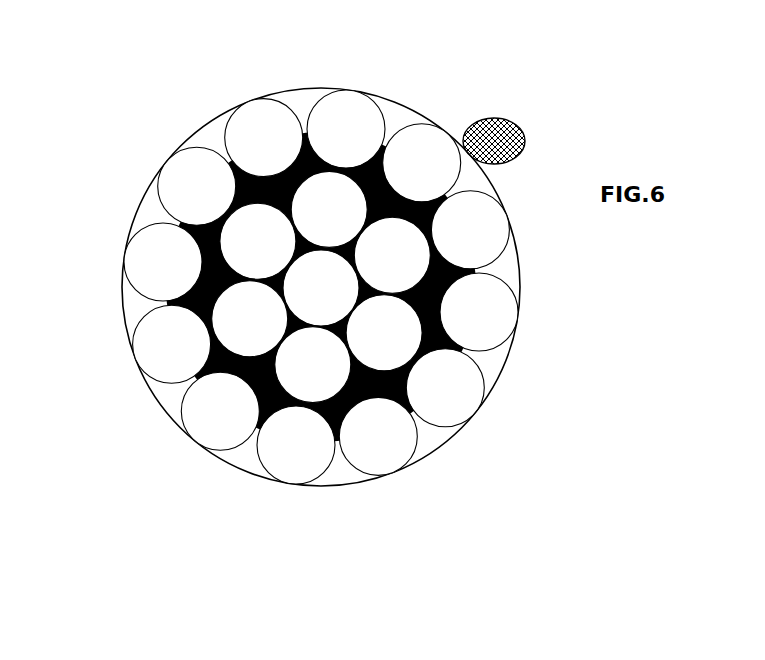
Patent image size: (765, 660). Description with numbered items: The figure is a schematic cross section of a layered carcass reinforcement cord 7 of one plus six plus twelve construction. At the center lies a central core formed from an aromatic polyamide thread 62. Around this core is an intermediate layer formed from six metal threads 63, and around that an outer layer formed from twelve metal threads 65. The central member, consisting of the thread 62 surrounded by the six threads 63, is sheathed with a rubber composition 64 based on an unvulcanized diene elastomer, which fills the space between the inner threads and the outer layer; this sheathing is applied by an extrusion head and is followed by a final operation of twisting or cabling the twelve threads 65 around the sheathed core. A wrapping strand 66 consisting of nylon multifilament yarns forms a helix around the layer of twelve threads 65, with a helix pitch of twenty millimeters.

The carcass reinforcement cord 7 is at (200, 112).
The aromatic polyamide thread 62 is at (308, 297).
The metal threads 63 is at (393, 272).
The rubber composition 64 is at (407, 398).
The metal threads 65 is at (383, 448).
The wrapping strand 66 is at (523, 136).